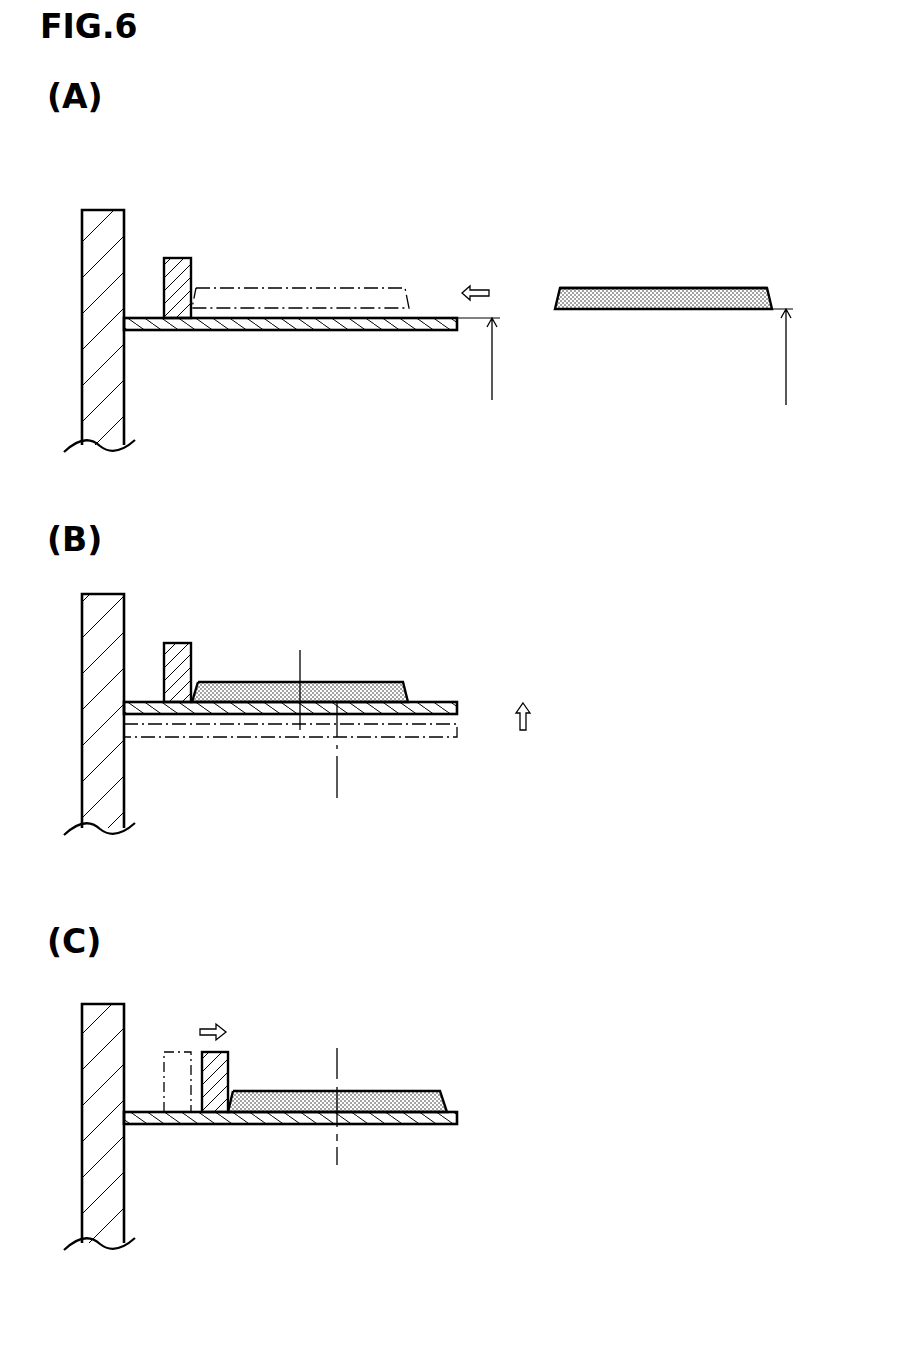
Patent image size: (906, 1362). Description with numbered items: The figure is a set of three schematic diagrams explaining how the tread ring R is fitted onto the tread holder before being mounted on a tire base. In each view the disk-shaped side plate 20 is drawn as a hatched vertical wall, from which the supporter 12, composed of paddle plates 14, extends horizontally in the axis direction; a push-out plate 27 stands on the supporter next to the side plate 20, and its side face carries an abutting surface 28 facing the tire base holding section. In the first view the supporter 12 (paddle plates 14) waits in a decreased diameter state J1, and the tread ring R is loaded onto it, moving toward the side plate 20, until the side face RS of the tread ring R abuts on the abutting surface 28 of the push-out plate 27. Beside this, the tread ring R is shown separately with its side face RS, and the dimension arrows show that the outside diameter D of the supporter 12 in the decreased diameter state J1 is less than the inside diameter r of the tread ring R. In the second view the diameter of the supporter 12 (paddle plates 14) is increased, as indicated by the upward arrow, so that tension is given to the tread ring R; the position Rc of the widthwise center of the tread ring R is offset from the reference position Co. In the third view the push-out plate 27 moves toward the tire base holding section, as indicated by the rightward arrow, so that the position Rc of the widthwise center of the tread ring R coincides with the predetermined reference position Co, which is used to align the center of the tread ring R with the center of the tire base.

The side plate 20 is at (83, 245).
The push-out plate 27 is at (172, 258).
The abutting surface 28 is at (191, 270).
The supporter 12 is at (325, 331).
The paddle plate 14 is at (304, 454).
The tread ring R is at (308, 288).
The side face of the tread ring RS is at (561, 288).
The decreased diameter state J1 is at (396, 240).
The outside diameter D is at (479, 375).
The inside diameter r is at (782, 371).
The position of the widthwise center Rc is at (300, 682).
The reference position Co is at (337, 750).